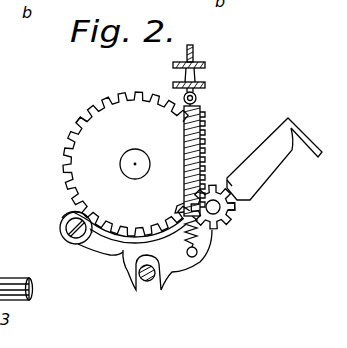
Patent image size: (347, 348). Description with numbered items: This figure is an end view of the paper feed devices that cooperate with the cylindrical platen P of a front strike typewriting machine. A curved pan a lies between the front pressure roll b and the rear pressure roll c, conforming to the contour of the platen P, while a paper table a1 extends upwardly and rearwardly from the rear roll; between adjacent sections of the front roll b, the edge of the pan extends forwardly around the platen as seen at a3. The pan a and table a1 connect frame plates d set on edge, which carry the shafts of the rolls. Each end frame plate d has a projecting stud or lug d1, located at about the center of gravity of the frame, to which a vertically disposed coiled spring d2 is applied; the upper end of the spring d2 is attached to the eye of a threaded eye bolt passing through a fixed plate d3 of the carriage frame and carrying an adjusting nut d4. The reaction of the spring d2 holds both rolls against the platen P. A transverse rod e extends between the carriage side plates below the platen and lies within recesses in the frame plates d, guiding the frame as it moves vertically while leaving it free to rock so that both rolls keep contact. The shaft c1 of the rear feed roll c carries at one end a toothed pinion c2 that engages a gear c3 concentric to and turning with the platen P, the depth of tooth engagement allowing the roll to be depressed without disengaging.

The platen P is at (92, 114).
The gear c3 is at (78, 126).
The pan a is at (126, 236).
The paper table a1 is at (254, 158).
The forwardly extending pan edge a3 is at (72, 211).
The front pressure roll b is at (60, 231).
The rear pressure roll c is at (226, 226).
The shaft of the rear feed roll c1 is at (220, 206).
The toothed pinion c2 is at (236, 216).
The frame plate d is at (123, 250).
The projecting stud or lug d1 is at (195, 257).
The coiled spring d2 is at (197, 103).
The fixed plate of the carriage frame d3 is at (205, 83).
The adjusting nut d4 is at (205, 63).
The transverse rod e is at (148, 283).